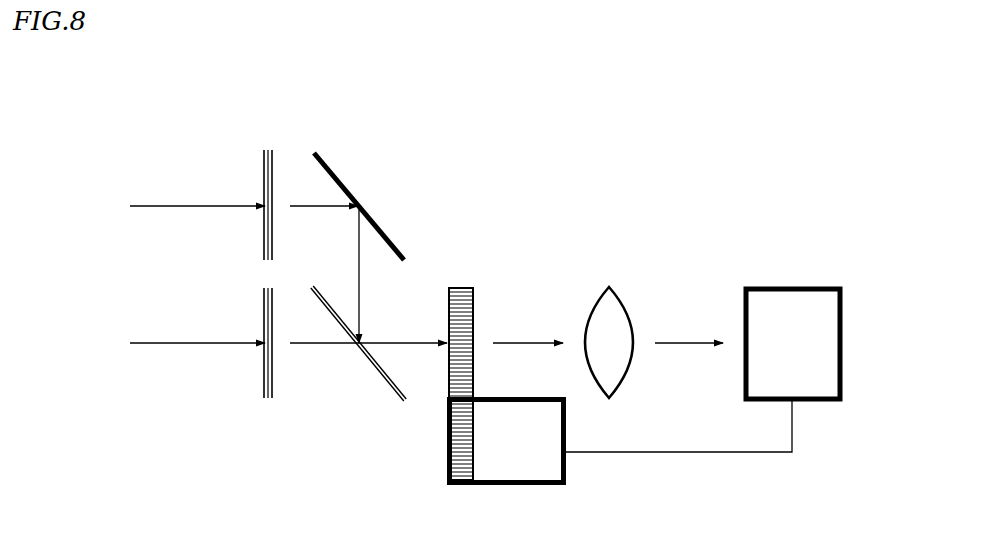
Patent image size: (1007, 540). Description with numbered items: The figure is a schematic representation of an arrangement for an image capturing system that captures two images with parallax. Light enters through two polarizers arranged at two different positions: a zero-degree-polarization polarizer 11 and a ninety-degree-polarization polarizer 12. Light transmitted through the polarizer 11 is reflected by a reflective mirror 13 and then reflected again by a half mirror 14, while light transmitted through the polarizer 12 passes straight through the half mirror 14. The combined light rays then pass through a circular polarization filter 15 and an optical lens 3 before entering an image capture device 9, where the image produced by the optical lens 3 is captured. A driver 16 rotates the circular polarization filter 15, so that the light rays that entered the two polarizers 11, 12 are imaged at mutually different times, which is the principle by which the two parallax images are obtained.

The 0-degree-polarization polarizer 11 is at (265, 150).
The 90-degree-polarization polarizer 12 is at (265, 400).
The reflective mirror 13 is at (337, 173).
The half mirror 14 is at (378, 372).
The circular polarization filter 15 is at (475, 287).
The optical lens 3 is at (610, 315).
The image capture device 9 is at (792, 315).
The driver 16 is at (542, 452).